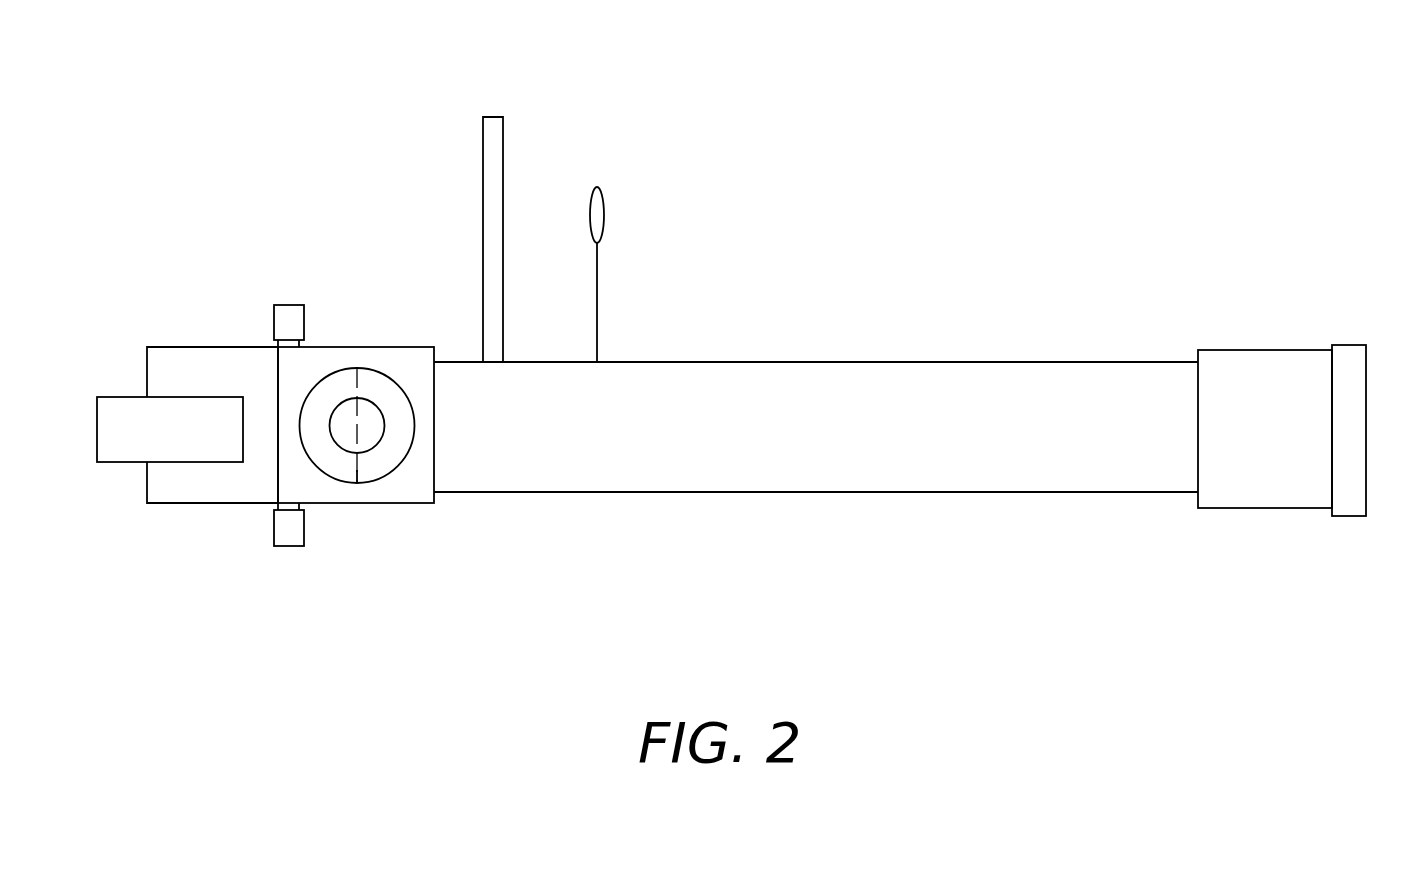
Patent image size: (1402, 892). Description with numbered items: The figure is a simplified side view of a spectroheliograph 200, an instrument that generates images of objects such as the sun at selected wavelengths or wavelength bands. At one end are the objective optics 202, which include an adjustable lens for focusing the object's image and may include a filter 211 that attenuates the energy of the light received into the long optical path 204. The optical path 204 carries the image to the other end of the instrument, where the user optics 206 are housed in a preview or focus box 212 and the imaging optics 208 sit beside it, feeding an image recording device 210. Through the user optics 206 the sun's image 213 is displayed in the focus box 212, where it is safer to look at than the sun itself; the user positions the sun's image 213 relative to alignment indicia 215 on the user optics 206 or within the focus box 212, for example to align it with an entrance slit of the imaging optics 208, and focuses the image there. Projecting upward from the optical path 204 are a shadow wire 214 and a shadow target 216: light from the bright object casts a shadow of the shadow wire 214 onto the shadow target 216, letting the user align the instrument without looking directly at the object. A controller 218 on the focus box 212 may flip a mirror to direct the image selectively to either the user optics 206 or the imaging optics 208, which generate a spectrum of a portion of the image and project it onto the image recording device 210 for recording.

The spectroheliograph 200 is at (966, 180).
The objective optics 202 is at (1262, 492).
The optical path 204 is at (867, 479).
The user optics 206 is at (332, 395).
The imaging optics 208 is at (188, 380).
The image recording device 210 is at (110, 447).
The filter 211 is at (1349, 357).
The focus box 212 is at (407, 488).
The sun's image 213 is at (365, 417).
The shadow wire 214 is at (597, 187).
The alignment indicia 215 is at (357, 471).
The shadow target 216 is at (493, 120).
The controller 218 is at (287, 532).